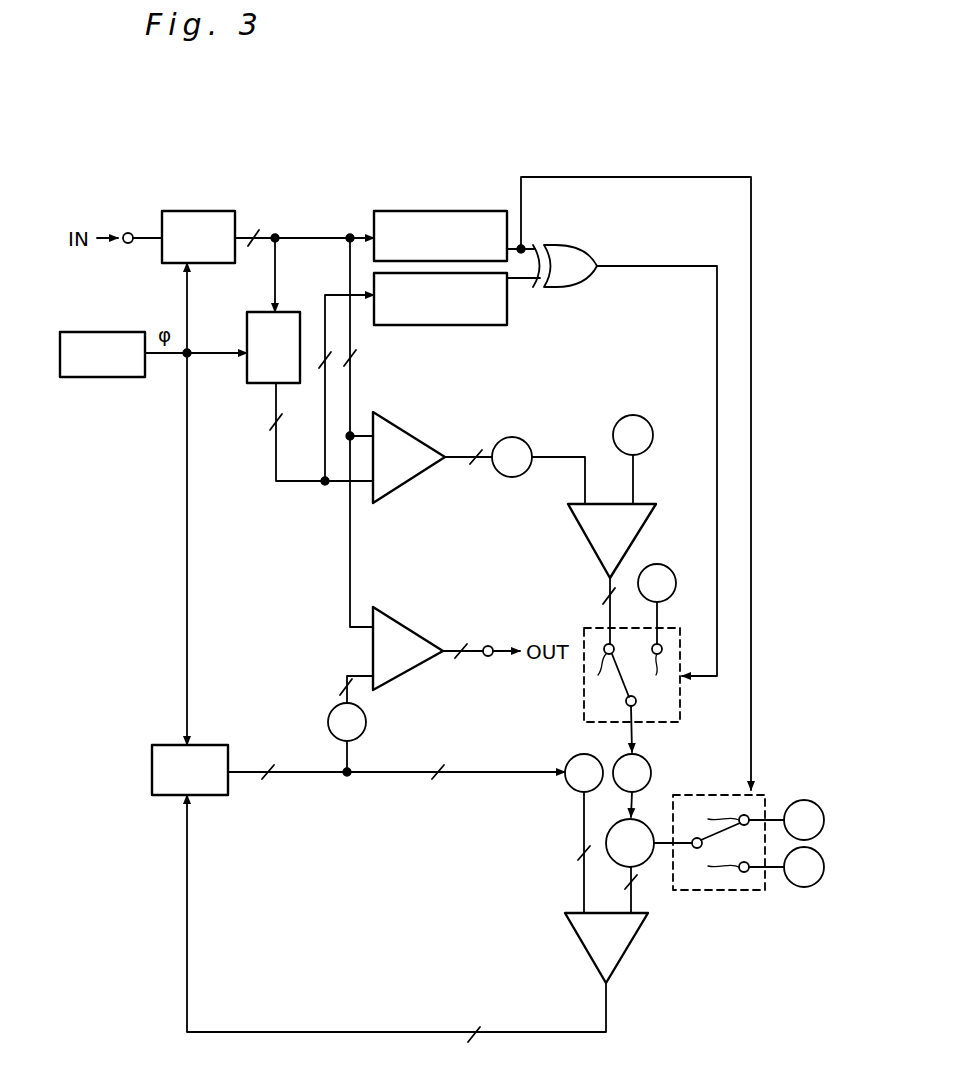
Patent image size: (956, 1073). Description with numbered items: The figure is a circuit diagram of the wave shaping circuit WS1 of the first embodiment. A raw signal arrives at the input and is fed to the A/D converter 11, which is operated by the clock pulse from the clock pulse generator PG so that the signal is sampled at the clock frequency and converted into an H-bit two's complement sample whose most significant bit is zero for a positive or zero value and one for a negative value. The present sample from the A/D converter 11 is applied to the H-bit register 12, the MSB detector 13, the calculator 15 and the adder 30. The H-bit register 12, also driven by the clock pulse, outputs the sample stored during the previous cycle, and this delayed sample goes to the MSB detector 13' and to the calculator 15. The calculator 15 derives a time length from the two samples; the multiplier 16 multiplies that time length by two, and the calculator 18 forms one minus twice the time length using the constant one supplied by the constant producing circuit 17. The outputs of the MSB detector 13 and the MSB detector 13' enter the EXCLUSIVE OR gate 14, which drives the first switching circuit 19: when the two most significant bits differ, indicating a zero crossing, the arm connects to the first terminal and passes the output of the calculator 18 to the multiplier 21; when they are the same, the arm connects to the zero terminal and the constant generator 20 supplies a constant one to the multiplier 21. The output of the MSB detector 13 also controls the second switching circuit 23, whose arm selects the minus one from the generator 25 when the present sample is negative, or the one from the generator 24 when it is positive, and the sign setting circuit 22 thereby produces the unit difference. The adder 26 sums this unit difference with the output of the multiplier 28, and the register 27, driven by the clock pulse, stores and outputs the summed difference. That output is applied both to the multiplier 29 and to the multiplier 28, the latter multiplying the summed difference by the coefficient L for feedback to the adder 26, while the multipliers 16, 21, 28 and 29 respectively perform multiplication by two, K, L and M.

The wave shaping circuit WS1 is at (592, 155).
The clock pulse generator PG is at (103, 332).
The A/D converter 11 is at (196, 211).
The H-bit register 12 is at (292, 312).
The MSB detector 13 is at (440, 199).
The MSB detector 13' is at (440, 328).
The EXCLUSIVE OR gate 14 is at (578, 250).
The calculator 15 is at (408, 482).
The multiplier 16 is at (510, 437).
The constant producing circuit 17 is at (637, 417).
The calculator 18 is at (656, 514).
The first switching circuit 19 is at (680, 638).
The constant generator 20 is at (676, 580).
The multiplier 21 is at (650, 762).
The sign setting circuit 22 is at (645, 868).
The second switching circuit 23 is at (740, 890).
The generator 24 is at (802, 800).
The generator 25 is at (805, 888).
The adder 26 is at (572, 935).
The register 27 is at (152, 756).
The multiplier 28 is at (570, 788).
The multiplier 29 is at (329, 734).
The adder 30 is at (373, 650).